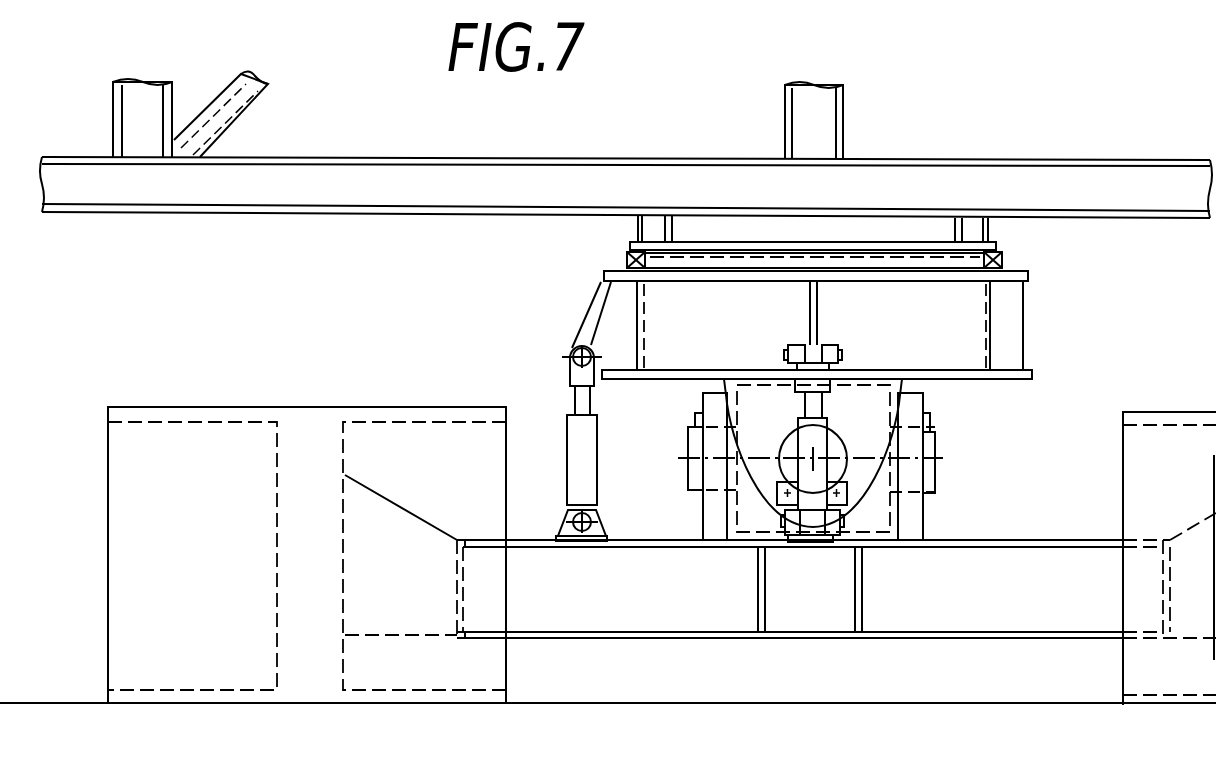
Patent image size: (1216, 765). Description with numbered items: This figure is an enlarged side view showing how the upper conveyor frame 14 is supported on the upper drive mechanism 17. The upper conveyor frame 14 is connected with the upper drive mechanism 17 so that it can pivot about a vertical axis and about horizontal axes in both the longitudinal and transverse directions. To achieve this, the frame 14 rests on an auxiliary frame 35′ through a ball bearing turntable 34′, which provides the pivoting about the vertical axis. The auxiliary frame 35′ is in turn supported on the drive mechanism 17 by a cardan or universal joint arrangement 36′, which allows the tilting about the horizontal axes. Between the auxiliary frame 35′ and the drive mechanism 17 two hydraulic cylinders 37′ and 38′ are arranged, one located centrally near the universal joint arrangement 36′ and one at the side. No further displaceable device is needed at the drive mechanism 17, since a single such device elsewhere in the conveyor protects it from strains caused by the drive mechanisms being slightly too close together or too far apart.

The upper conveyor frame 14 is at (285, 228).
The upper drive mechanism 17 is at (368, 386).
The ball bearing turntable 34′ is at (1020, 259).
The auxiliary frame 35′ is at (968, 333).
The cardan or universal joint arrangement 36′ is at (960, 457).
The hydraulic cylinder 37′ is at (820, 465).
The hydraulic cylinder 38′ is at (567, 453).